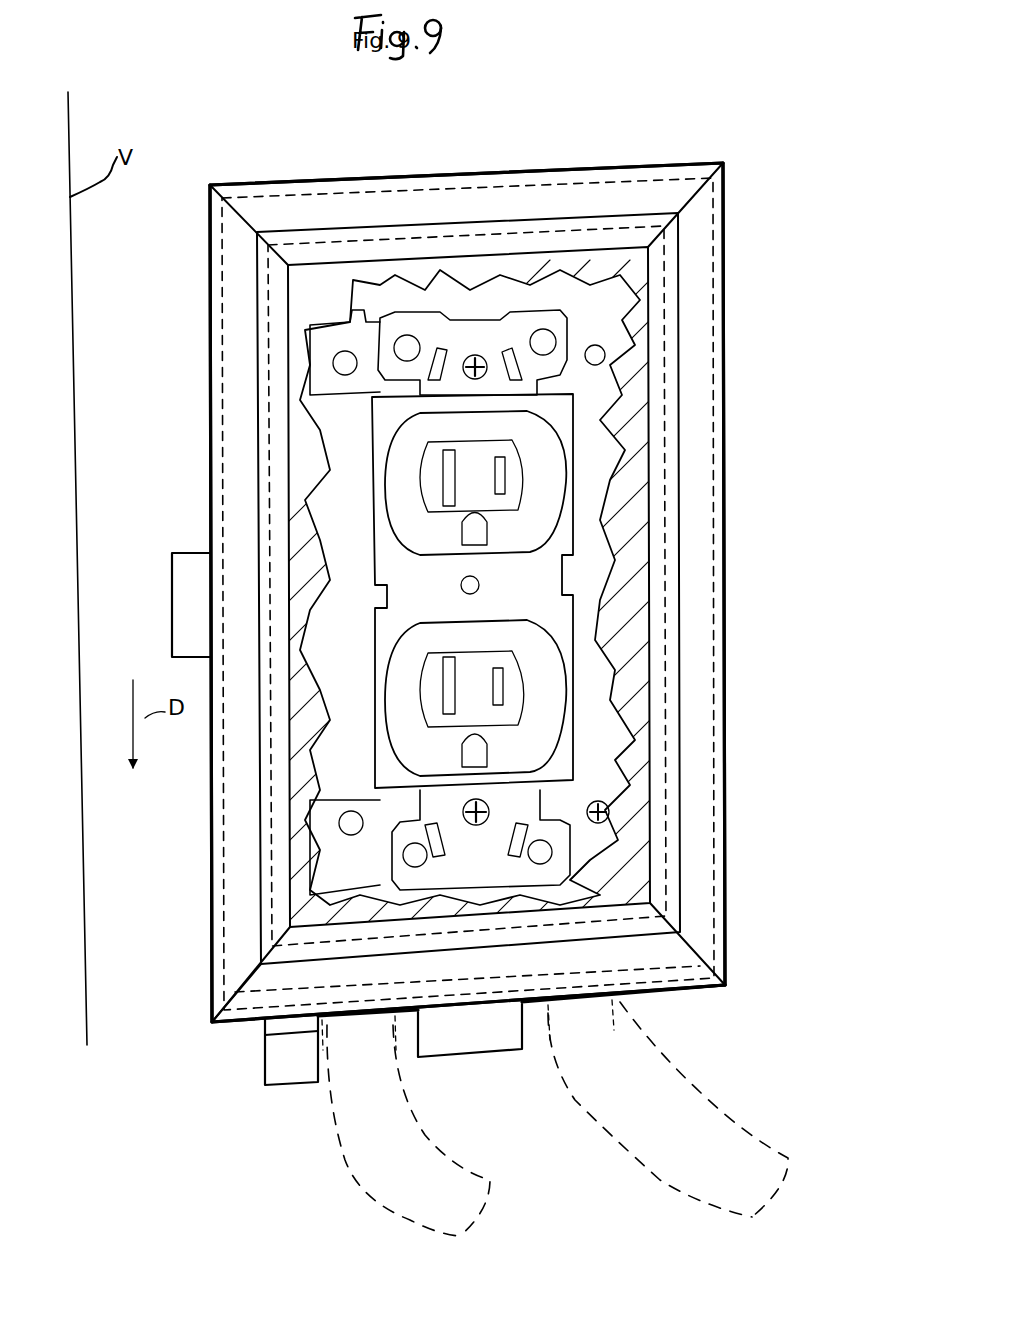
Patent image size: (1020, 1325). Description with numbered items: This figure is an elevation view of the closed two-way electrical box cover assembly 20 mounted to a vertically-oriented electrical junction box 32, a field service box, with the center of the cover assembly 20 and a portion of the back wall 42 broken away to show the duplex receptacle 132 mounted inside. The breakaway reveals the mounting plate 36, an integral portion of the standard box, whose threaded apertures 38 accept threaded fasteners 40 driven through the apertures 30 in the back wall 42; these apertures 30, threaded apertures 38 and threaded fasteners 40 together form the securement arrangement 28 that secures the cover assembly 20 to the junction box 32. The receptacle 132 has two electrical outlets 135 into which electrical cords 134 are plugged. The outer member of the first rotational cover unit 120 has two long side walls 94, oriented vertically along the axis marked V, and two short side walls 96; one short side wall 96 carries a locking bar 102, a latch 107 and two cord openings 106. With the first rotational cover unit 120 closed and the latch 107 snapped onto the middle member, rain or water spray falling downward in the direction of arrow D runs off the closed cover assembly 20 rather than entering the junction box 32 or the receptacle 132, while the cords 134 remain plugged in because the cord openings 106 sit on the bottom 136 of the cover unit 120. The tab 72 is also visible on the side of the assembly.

The two-way electrical box cover assembly 20 is at (698, 250).
The securement arrangement 28 is at (593, 585).
The apertures 30 is at (592, 346).
The electrical junction box 32 is at (322, 343).
The mounting plate 36 is at (358, 338).
The threaded apertures 38 is at (345, 376).
The threaded fasteners 40 is at (598, 802).
The back wall 42 is at (428, 320).
The tab 72 is at (200, 615).
The long side walls 94 is at (740, 377).
The short side walls 96 is at (518, 163).
The locking bar 102 is at (305, 1062).
The cord openings 106 is at (365, 1022).
The latch 107 is at (490, 1038).
The first rotational cover unit 120 is at (747, 487).
The duplex receptacle 132 is at (555, 551).
The electrical cords 134 is at (382, 1120).
The electrical outlets 135 is at (520, 472).
The bottom 136 is at (240, 1030).